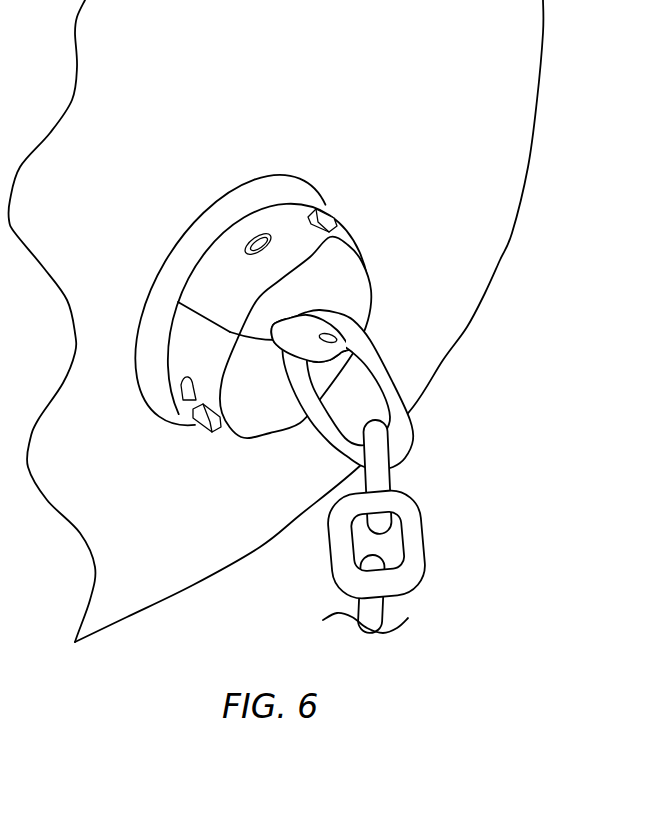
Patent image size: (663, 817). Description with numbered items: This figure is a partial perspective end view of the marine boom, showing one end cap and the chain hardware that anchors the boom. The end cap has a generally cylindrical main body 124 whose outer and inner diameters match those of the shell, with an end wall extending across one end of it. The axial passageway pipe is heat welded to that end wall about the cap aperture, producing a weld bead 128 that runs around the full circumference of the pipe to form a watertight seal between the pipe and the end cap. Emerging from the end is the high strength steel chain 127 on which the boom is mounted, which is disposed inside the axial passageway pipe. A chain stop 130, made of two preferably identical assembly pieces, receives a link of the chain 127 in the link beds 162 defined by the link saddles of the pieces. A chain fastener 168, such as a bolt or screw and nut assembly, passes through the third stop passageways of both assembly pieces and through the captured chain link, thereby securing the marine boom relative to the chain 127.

The main body 124 is at (281, 80).
The chain 127 is at (415, 497).
The weld bead 128 is at (267, 203).
The chain stop 130 is at (412, 268).
The link bed 162 is at (181, 390).
The chain fastener 168 is at (257, 235).